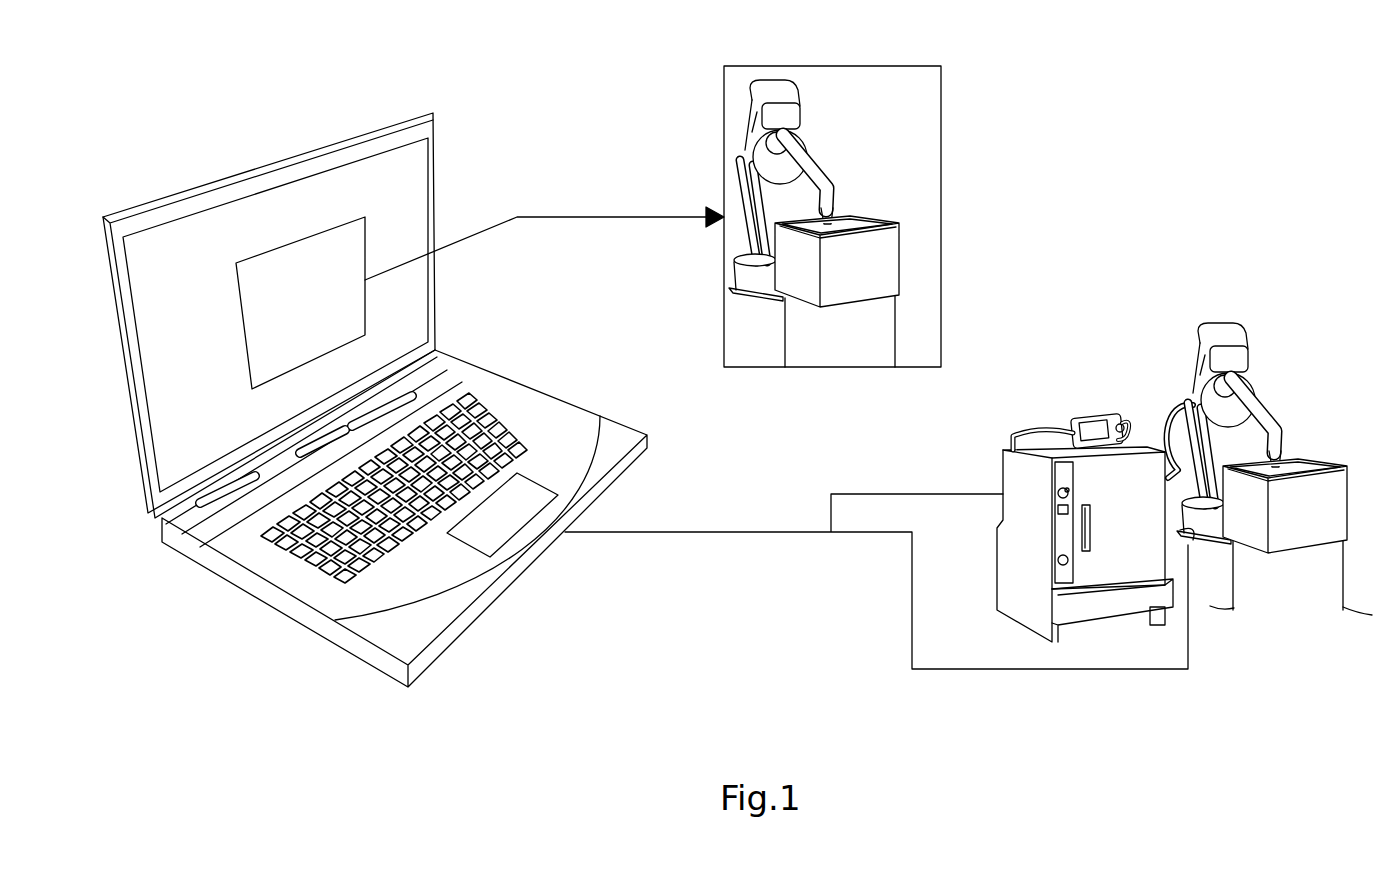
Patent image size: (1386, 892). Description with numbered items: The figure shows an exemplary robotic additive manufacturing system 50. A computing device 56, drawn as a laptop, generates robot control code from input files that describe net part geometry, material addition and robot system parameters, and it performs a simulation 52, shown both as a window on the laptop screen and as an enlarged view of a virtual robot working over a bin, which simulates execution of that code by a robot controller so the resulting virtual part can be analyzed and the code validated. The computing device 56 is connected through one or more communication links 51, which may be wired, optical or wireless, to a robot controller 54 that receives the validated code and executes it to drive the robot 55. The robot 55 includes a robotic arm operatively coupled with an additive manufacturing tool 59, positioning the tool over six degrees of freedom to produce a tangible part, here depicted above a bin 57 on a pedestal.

The robotic additive manufacturing (RAM) system 50 is at (1124, 187).
The communication link 51 is at (832, 537).
The simulation 52 is at (270, 252).
The robot controller 54 is at (1076, 433).
The robot 55 is at (1272, 404).
The computing device 56 is at (267, 166).
The bin 57 is at (1283, 449).
The additive manufacturing tool 59 is at (1282, 470).